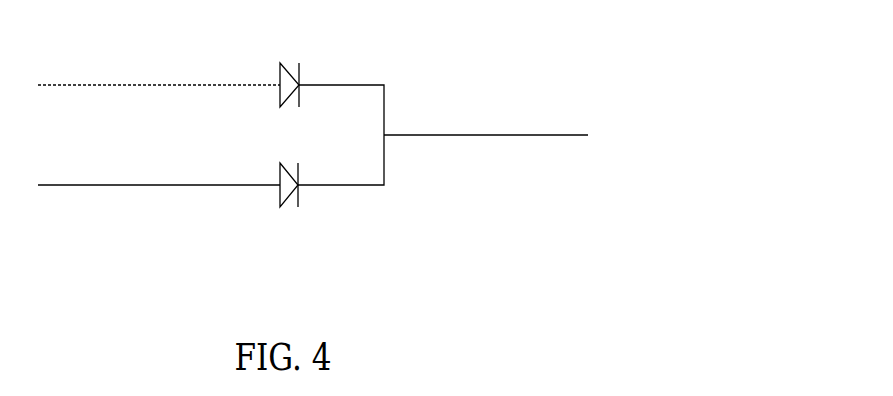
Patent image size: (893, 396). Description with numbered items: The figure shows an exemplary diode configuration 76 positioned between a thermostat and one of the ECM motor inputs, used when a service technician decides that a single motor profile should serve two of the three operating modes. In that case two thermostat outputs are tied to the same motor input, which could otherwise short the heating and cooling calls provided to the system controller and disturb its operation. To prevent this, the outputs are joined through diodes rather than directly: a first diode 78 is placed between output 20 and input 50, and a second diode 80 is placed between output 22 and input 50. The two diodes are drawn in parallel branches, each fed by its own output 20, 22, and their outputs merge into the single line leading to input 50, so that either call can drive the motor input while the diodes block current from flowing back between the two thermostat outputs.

The output 20 is at (114, 85).
The output 22 is at (110, 185).
The motor input 50 is at (440, 135).
The diode configuration 76 is at (398, 47).
The first diode 78 is at (292, 65).
The second diode 80 is at (290, 205).